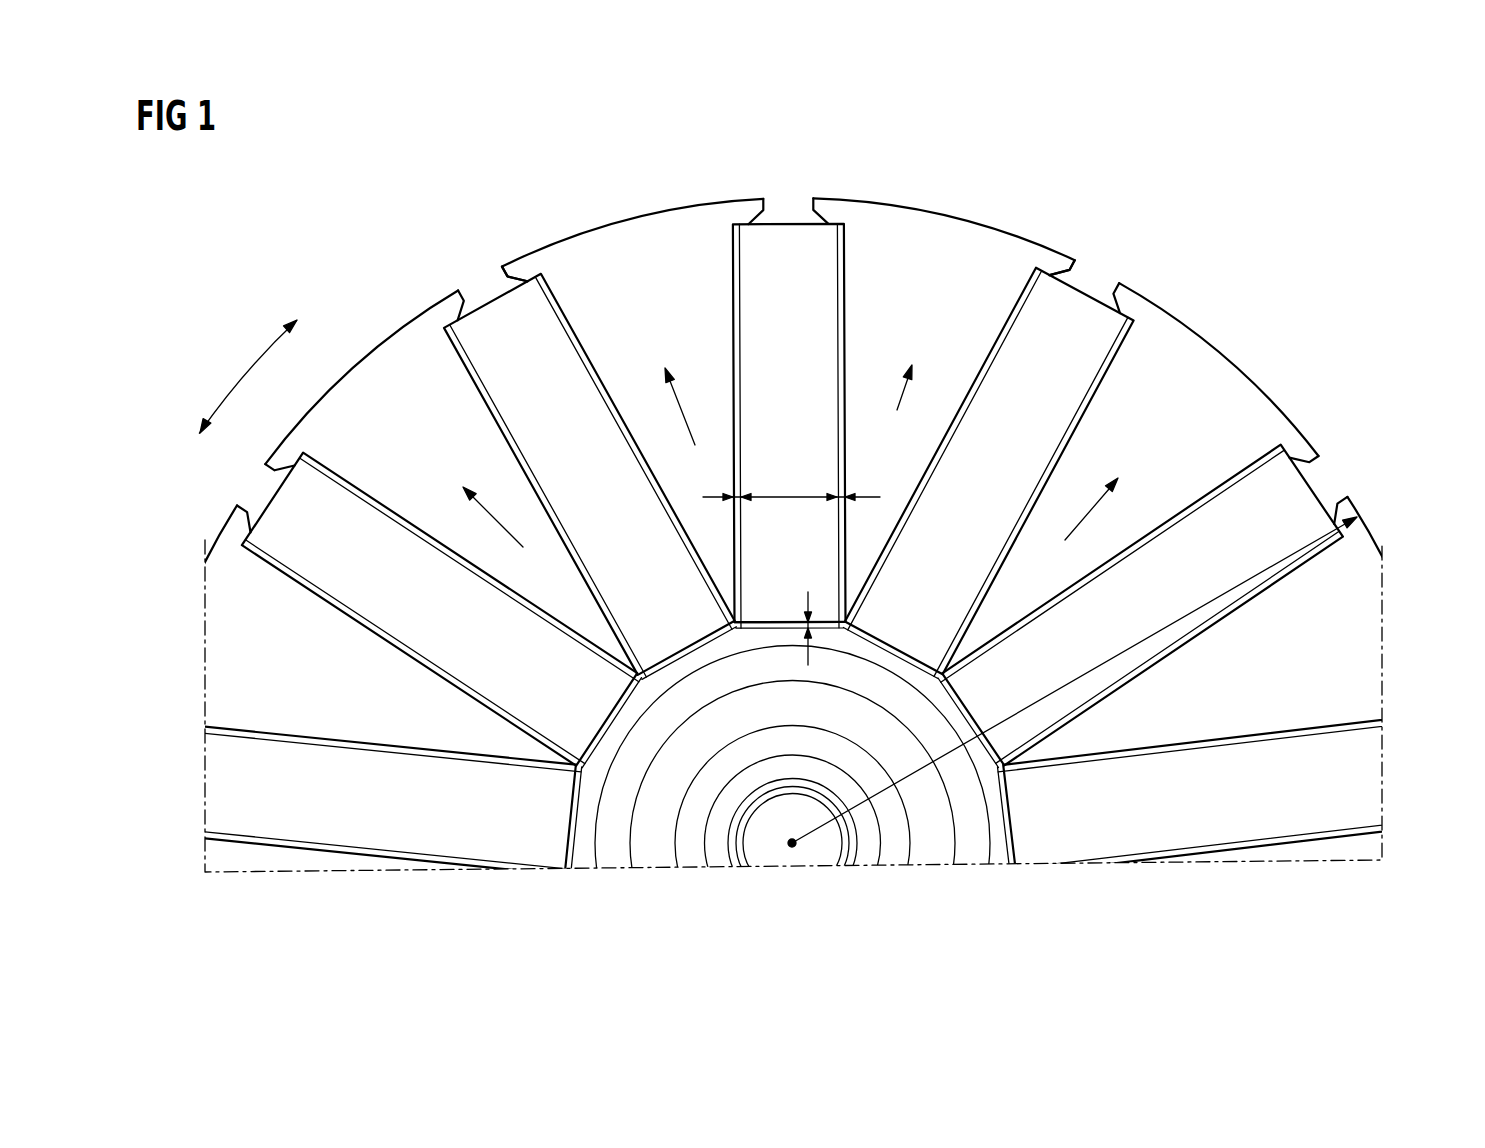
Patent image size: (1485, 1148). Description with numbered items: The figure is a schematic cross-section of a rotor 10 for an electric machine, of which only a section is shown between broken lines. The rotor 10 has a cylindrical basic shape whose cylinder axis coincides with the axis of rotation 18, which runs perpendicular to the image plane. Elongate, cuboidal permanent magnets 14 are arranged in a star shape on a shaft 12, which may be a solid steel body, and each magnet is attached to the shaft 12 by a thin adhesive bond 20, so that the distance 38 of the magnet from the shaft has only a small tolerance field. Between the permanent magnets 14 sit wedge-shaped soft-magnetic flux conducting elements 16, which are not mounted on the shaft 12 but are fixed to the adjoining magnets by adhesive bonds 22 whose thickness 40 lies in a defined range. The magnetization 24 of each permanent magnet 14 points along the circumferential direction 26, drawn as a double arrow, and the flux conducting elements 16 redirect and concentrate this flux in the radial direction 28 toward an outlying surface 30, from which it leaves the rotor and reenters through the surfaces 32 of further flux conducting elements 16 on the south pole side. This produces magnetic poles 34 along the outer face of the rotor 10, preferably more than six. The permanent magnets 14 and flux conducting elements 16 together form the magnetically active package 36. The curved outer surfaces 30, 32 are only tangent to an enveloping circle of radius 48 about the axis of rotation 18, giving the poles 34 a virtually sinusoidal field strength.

The rotor 10 is at (386, 212).
The shaft 12 is at (935, 860).
The permanent magnets 14 is at (790, 240).
The flux conducting elements 16 is at (1417, 640).
The axis of rotation 18 is at (794, 850).
The adhesive bond 20 is at (757, 612).
The adhesive bond 22 is at (850, 286).
The magnetization 24 is at (598, 472).
The circumferential direction 26 is at (252, 358).
The radial direction 28 is at (497, 521).
The outlying surface 30 is at (702, 200).
The surface 32 is at (402, 325).
The magnetic poles 34 is at (328, 327).
The magnetically active package 36 is at (477, 148).
The distance 38 is at (808, 665).
The thickness 40 is at (768, 490).
The radius 48 is at (1203, 600).